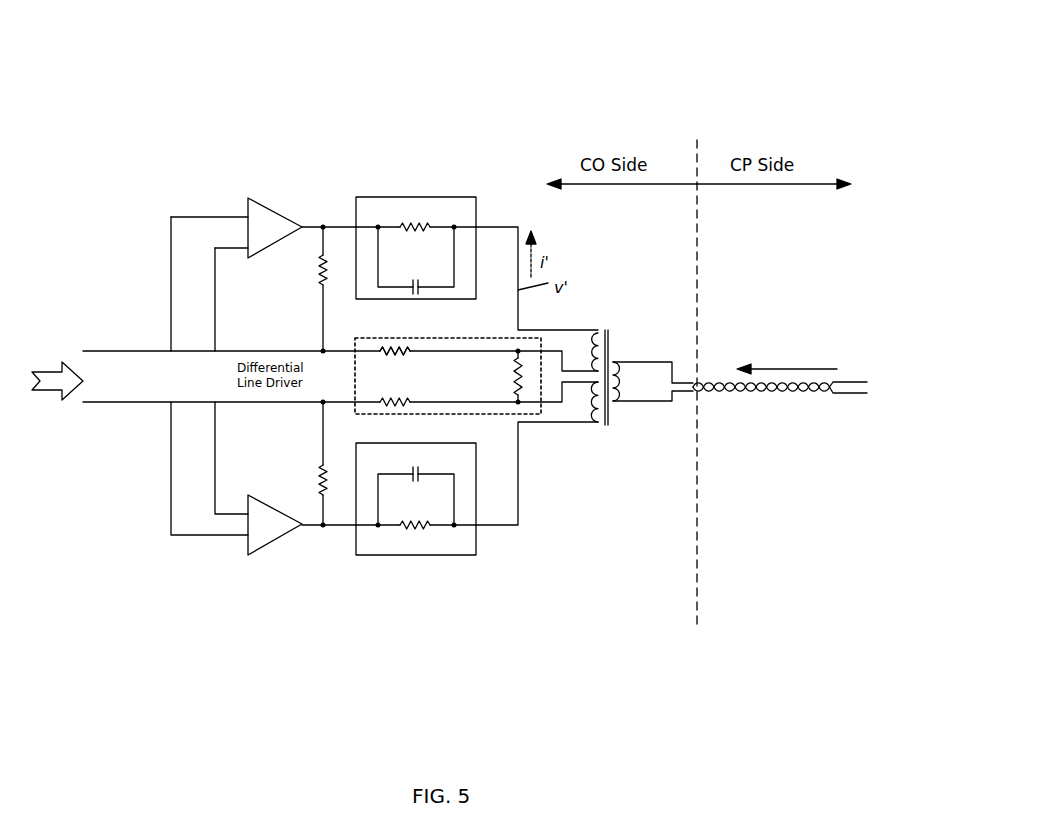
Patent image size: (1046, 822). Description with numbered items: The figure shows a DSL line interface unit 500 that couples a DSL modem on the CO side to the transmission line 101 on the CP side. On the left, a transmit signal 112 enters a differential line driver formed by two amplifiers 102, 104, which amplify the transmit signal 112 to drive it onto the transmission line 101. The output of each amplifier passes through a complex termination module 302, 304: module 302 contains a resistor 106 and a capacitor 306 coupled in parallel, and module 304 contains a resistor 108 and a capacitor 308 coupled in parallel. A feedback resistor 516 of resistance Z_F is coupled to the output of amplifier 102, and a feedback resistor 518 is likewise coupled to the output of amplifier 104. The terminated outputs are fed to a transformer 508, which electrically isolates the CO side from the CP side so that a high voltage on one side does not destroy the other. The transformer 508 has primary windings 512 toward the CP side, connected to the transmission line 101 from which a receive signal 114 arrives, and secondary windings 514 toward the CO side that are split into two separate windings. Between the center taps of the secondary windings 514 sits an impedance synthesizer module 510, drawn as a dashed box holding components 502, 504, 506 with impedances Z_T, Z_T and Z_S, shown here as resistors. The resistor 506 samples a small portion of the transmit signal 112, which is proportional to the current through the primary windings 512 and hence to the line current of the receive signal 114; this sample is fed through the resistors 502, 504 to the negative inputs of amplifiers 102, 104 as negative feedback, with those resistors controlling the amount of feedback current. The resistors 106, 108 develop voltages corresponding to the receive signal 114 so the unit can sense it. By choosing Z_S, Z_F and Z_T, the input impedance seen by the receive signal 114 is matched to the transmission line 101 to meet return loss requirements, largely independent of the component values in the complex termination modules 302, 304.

The DSL line interface unit 500 is at (572, 100).
The differential amplifier 102 is at (272, 209).
The differential amplifier 104 is at (272, 545).
The resistor 106 is at (428, 225).
The resistor 108 is at (430, 527).
The complex termination module 302 is at (432, 197).
The complex termination module 304 is at (438, 556).
The capacitor 306 is at (413, 289).
The capacitor 308 is at (420, 468).
The resistor 502 is at (389, 351).
The resistor 504 is at (408, 376).
The resistor 506 is at (518, 362).
The transformer 508 is at (630, 379).
The impedance synthesizer module 510 is at (450, 331).
The primary windings 512 is at (617, 405).
The secondary windings 514 is at (598, 425).
The resistor 516 is at (321, 285).
The resistor 518 is at (321, 466).
The transmit signal 112 is at (50, 395).
The receive signal 114 is at (790, 312).
The transmission line 101 is at (792, 393).